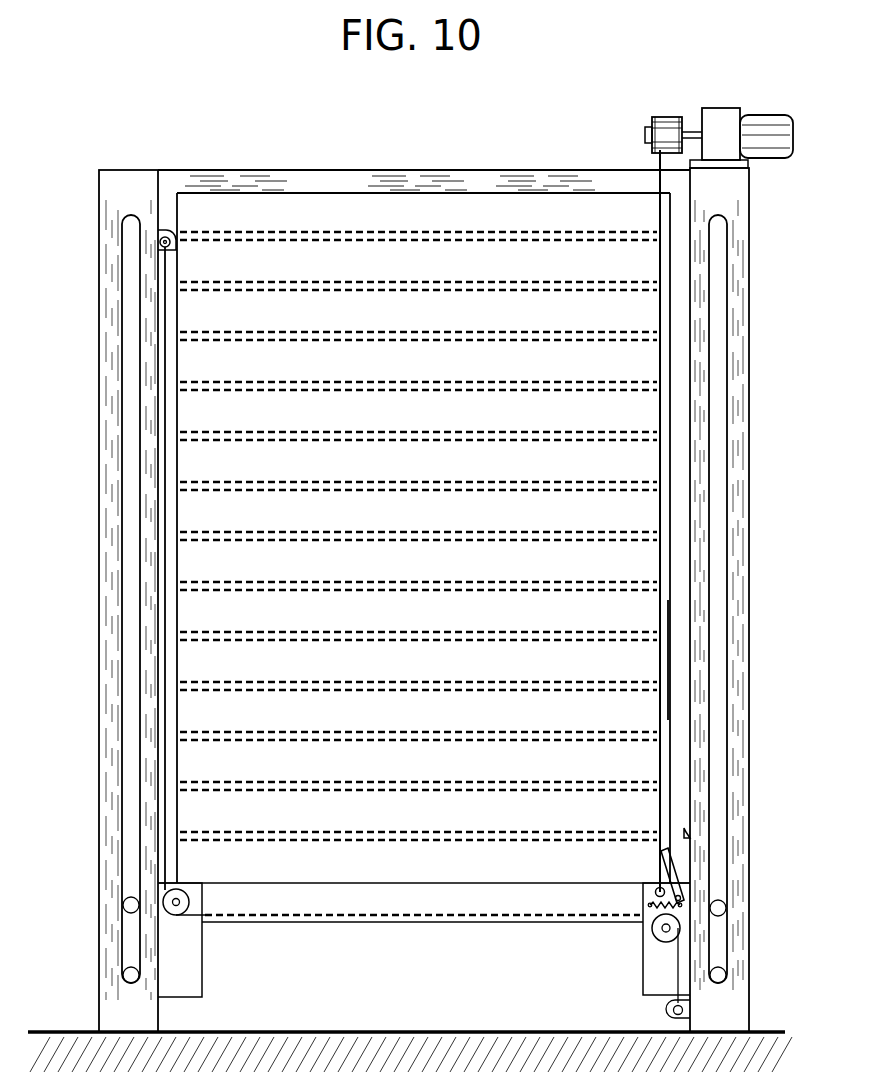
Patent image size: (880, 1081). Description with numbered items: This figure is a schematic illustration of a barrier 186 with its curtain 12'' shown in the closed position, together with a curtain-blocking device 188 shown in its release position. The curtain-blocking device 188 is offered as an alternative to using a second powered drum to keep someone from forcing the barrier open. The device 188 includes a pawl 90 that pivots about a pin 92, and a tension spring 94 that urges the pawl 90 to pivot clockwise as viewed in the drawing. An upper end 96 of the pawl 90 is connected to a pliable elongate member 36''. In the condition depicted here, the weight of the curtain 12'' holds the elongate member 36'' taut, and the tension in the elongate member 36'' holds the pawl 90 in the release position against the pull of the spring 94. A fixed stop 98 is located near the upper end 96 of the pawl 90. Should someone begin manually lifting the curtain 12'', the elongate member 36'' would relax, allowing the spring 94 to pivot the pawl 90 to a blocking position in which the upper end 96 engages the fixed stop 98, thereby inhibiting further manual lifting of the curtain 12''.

The barrier 186 is at (211, 136).
The curtain 12'' is at (418, 536).
The pliable elongate member 36'' is at (607, 660).
The curtain-blocking device 188 is at (614, 862).
The fixed stop 98 is at (685, 832).
The upper end 96 is at (666, 853).
The pawl 90 is at (680, 890).
The pin 92 is at (683, 905).
The tension spring 94 is at (656, 912).